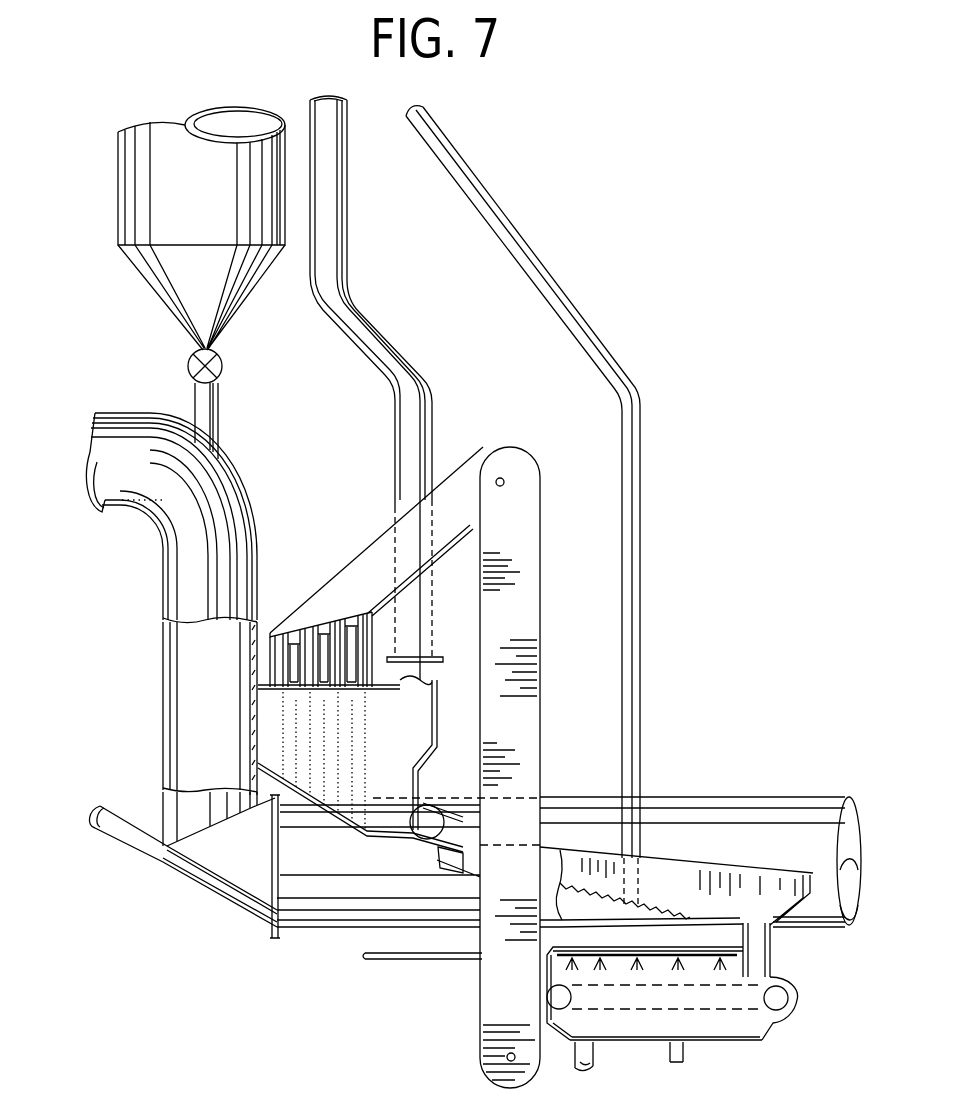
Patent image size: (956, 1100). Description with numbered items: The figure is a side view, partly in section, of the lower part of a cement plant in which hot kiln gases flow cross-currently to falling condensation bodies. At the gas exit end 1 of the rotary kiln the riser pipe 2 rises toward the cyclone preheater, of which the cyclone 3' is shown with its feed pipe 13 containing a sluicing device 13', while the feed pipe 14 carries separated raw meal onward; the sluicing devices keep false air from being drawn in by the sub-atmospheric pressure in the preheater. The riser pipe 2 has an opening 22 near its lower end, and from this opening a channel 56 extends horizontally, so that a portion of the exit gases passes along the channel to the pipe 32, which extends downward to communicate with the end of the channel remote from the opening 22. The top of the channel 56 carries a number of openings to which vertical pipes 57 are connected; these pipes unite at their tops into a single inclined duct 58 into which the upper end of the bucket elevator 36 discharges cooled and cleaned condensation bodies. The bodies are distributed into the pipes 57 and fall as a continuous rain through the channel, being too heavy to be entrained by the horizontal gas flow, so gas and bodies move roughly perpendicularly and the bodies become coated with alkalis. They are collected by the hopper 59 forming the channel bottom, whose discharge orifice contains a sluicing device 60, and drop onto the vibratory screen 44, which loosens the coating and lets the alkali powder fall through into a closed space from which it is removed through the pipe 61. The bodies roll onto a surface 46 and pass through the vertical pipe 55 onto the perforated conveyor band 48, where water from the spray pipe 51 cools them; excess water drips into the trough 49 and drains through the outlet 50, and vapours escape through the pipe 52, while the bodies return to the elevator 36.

The gas exit end of rotary kiln 1 is at (785, 820).
The riser pipe 2 is at (183, 585).
The cyclone 3' is at (201, 228).
The feed pipe 13 is at (228, 421).
The sluicing device 13' is at (228, 360).
The feed pipe 14 is at (127, 830).
The opening 22 is at (257, 740).
The pipe 32 is at (415, 436).
The bucket elevator 36 is at (520, 622).
The vibratory screen 44 is at (612, 890).
The surface 46 is at (707, 917).
The perforated conveyor band 48 is at (763, 1010).
The trough 49 is at (748, 1042).
The outlet 50 is at (680, 1050).
The spray pipe 51 is at (430, 960).
The pipe 52 is at (642, 625).
The vertical pipe 55 is at (773, 954).
The channel 56 is at (420, 747).
The vertical pipes 57 is at (323, 597).
The inclined duct 58 is at (385, 555).
The hopper 59 is at (362, 832).
The sluicing device 60 is at (423, 826).
The pipe 61 is at (592, 1050).